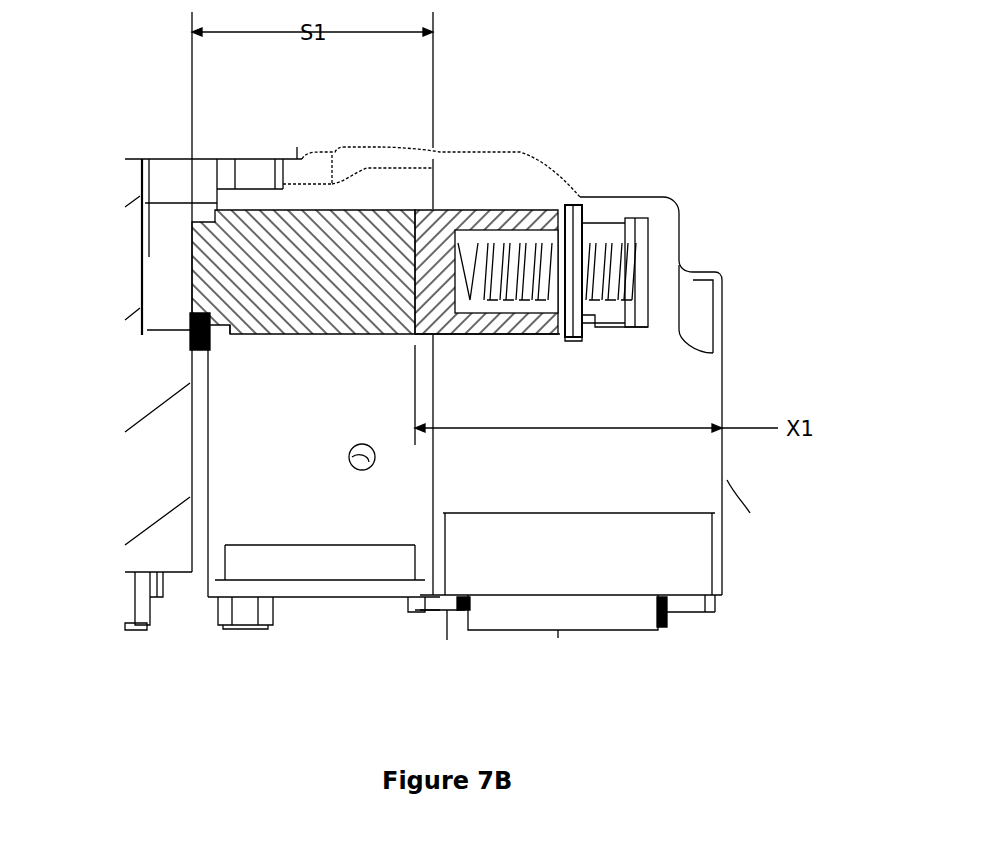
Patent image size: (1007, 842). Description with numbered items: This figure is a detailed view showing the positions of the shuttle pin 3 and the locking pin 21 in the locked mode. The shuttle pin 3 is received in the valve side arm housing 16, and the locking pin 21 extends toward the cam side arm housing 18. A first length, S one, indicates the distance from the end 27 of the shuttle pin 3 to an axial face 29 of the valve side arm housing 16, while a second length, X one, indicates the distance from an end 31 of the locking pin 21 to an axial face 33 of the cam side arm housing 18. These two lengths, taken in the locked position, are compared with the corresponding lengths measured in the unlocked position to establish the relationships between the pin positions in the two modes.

The shuttle pin 3 is at (380, 245).
The valve side arm housing 16 is at (395, 513).
The cam side arm housing 18 is at (700, 458).
The locking pin 21 is at (533, 222).
The end of the shuttle pin 27 is at (199, 237).
The axial face of the valve side arm housing 29 is at (413, 193).
The end of the locking pin 31 is at (455, 335).
The axial face of the cam side arm housing 33 is at (722, 368).